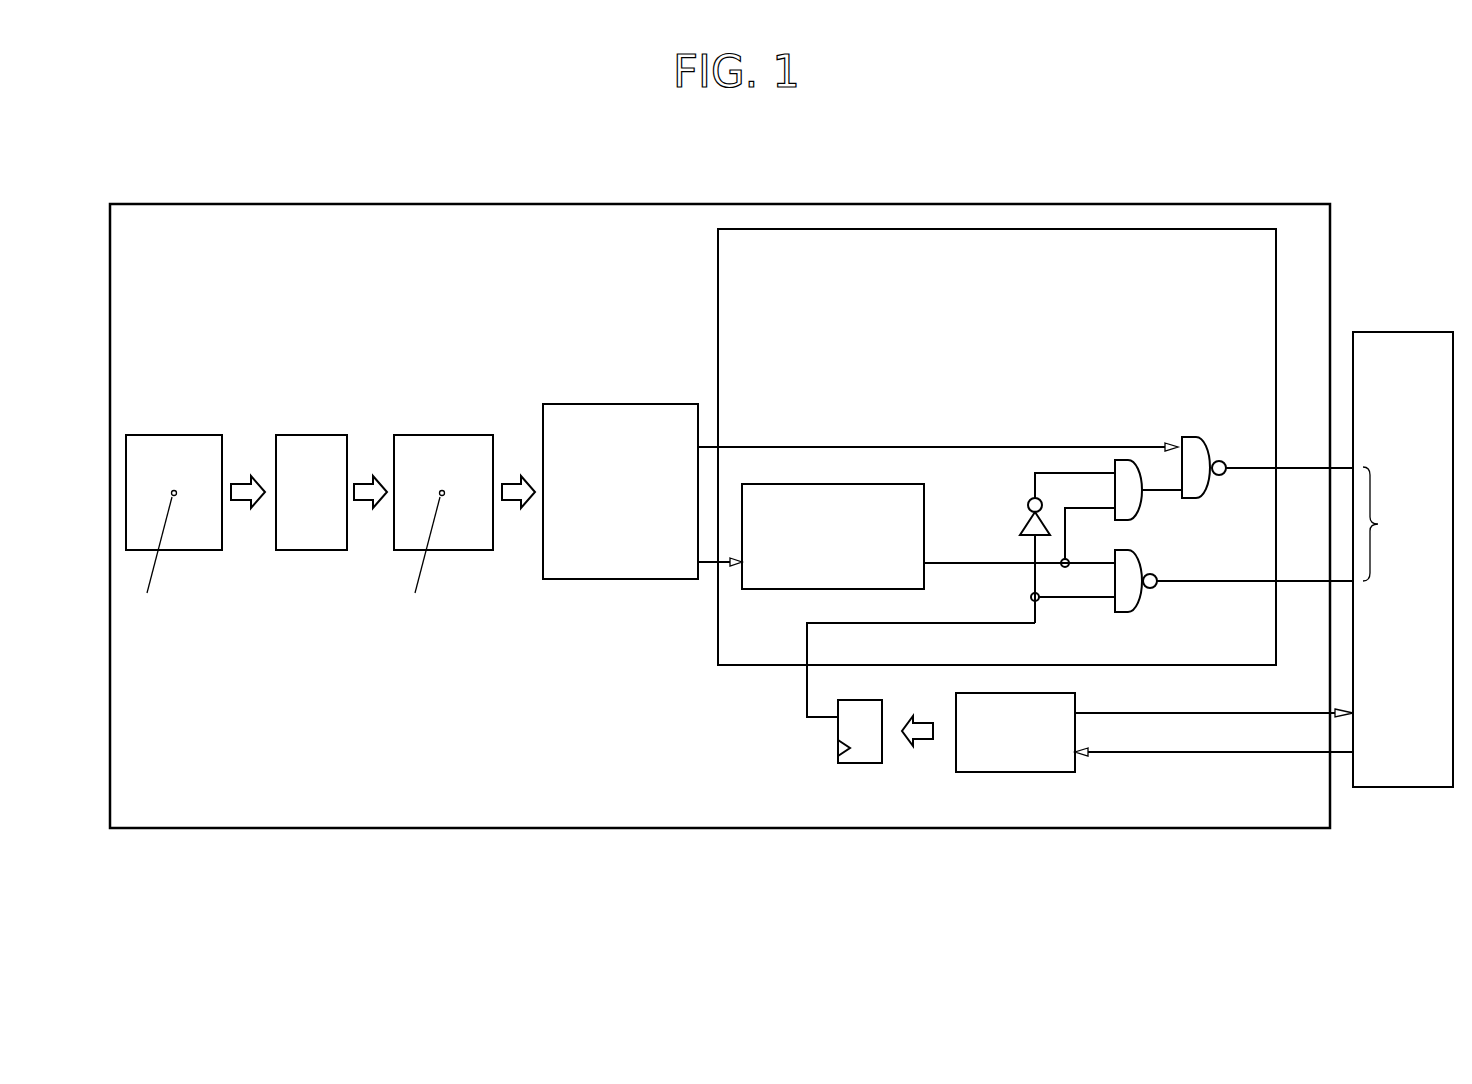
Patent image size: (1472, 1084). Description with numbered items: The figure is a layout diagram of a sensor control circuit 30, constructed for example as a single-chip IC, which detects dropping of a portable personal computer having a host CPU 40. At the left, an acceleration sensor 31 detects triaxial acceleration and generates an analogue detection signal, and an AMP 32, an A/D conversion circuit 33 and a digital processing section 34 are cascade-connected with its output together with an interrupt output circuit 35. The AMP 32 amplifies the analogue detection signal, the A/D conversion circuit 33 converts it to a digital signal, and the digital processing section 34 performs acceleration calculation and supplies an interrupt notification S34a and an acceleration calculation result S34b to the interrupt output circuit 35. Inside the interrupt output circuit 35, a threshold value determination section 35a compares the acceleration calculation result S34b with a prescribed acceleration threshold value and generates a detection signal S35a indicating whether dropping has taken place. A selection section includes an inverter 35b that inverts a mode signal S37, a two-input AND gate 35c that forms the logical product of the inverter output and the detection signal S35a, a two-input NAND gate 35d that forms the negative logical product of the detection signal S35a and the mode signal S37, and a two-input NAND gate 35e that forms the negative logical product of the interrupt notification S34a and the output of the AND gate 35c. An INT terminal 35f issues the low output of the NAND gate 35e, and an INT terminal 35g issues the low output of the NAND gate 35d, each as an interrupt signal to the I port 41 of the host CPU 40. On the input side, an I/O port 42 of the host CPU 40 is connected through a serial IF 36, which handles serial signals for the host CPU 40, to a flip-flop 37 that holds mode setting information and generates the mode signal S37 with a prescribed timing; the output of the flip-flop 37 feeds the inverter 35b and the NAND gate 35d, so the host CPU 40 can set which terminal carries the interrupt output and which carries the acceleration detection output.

The sensor control circuit 30 is at (282, 203).
The acceleration sensor 31 is at (181, 435).
The AMP 32 is at (318, 435).
The A/D conversion circuit 33 is at (457, 435).
The digital processing section 34 is at (655, 404).
The interrupt output circuit 35 is at (792, 229).
The threshold value determination section 35a is at (770, 590).
The inverter 35b is at (1027, 527).
The AND gate 35c is at (1143, 508).
The NAND gate 35d is at (1143, 603).
The NAND gate 35e is at (1207, 440).
The INT terminal 35f is at (1293, 468).
The INT terminal 35g is at (1293, 581).
The serial IF 36 is at (998, 773).
The flip-flop 37 is at (848, 765).
The host CPU 40 is at (1405, 332).
The I port 41 is at (1391, 524).
The I/O port 42 is at (1236, 728).
The interrupt notification S34a is at (898, 441).
The acceleration calculation result S34b is at (710, 562).
The detection signal S35a is at (1000, 557).
The mode signal S37 is at (1000, 619).